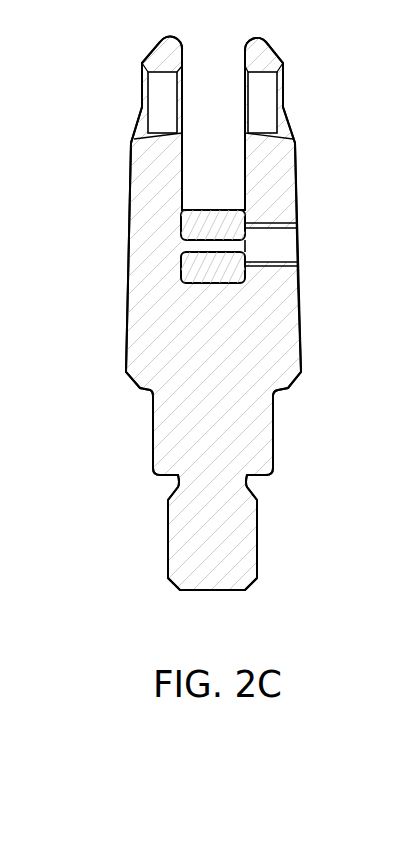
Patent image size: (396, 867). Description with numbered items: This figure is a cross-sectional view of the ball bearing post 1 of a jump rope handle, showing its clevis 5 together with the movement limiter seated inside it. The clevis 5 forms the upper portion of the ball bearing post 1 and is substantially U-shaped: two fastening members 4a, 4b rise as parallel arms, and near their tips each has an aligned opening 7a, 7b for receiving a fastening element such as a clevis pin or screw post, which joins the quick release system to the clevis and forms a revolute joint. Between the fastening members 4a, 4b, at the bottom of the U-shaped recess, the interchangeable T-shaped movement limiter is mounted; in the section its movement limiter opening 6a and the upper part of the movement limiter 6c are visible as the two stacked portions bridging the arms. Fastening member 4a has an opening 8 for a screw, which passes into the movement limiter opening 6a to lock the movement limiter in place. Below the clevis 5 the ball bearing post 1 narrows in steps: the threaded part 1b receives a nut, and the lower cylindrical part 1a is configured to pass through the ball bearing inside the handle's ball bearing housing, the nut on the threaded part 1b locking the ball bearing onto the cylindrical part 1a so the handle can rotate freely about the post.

The ball bearing post 1 is at (124, 441).
The cylindrical part 1a is at (237, 538).
The threaded part 1b is at (257, 442).
The fastening member 4a is at (273, 180).
The fastening member 4b is at (155, 175).
The clevis 5 is at (208, 300).
The movement limiter opening 6a is at (192, 247).
The upper part of movement limiter 6c is at (227, 275).
The opening for fastening element 7a is at (265, 108).
The opening for fastening element 7b is at (158, 107).
The opening for screw 8 is at (272, 253).